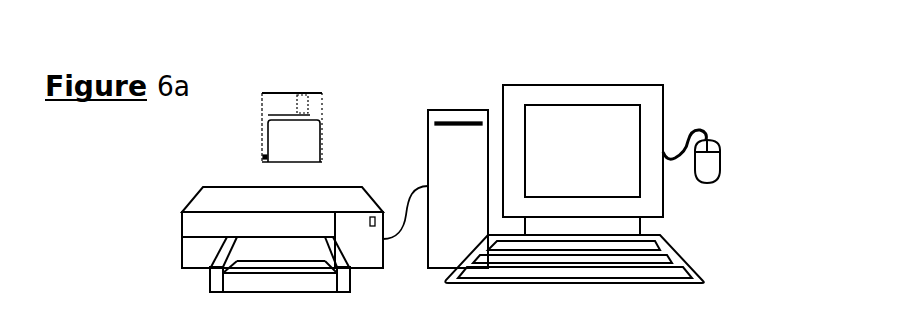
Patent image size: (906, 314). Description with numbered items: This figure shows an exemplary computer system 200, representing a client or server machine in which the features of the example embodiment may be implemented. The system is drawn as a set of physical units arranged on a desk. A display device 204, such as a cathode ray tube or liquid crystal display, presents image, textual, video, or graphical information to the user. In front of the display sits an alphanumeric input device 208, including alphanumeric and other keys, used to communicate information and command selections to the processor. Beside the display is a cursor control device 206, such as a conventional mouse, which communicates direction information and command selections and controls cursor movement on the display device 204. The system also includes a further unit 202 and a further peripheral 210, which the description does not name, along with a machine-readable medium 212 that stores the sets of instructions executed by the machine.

The computer system 200 is at (672, 72).
The computer tower (CPU unit) 202 is at (460, 110).
The display device 204 is at (663, 115).
The cursor control device 206 is at (720, 165).
The alphanumeric input device 208 is at (703, 273).
The printer 210 is at (185, 205).
The machine-readable medium 212 is at (257, 140).